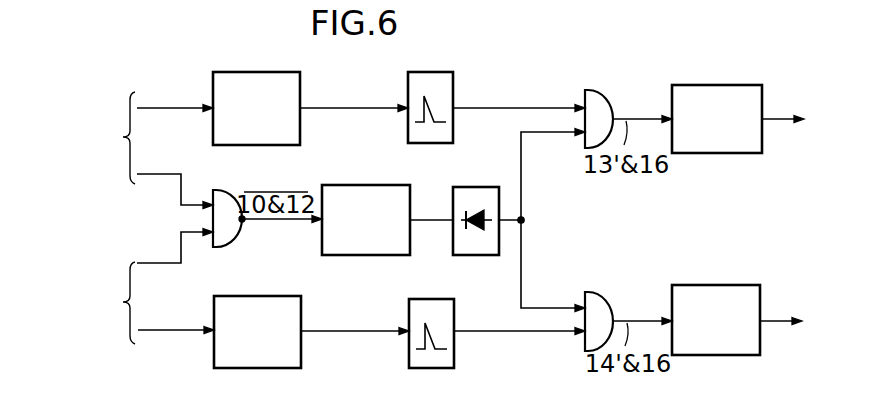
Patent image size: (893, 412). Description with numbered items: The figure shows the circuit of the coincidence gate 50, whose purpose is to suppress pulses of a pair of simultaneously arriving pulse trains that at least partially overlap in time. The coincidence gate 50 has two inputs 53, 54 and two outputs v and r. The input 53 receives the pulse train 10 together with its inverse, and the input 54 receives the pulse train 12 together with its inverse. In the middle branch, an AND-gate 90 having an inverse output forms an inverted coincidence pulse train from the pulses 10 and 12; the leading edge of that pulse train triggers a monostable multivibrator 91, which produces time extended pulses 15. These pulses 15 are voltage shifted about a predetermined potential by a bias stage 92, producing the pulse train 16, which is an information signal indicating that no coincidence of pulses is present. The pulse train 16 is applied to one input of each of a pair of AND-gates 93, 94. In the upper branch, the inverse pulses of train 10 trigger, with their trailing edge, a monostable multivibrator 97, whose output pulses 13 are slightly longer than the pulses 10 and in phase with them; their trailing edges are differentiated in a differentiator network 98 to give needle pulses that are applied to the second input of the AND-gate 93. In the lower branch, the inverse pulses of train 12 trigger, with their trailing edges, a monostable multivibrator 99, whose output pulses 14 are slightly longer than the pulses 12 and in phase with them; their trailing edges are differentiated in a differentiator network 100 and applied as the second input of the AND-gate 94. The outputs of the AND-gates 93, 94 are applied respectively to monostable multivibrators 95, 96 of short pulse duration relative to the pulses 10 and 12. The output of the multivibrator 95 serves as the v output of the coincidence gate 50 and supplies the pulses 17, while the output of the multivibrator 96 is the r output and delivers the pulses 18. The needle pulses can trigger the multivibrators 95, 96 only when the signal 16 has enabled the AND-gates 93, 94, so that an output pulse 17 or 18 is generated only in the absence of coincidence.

The pulse train 10 is at (151, 78).
The pulse train 12 is at (177, 303).
The output pulses 13 is at (442, 96).
The output pulses 14 is at (443, 319).
The time extended pulses 15 is at (431, 209).
The pulse train 16 is at (542, 220).
The pulses 17 is at (792, 111).
The pulses 18 is at (788, 312).
The coincidence gate 50 is at (647, 233).
The input 53 is at (113, 138).
The input 54 is at (113, 303).
The AND-gate 90 is at (230, 198).
The monostable multivibrator 91 is at (374, 190).
The bias stage 92 is at (481, 192).
The AND-gate 93 is at (604, 104).
The AND-gate 94 is at (602, 311).
The monostable multivibrator 95 is at (756, 91).
The monostable multivibrator 96 is at (717, 292).
The monostable multivibrator 97 is at (286, 79).
The differentiator network 98 is at (444, 80).
The monostable multivibrator 99 is at (280, 305).
The differentiator network 100 is at (432, 305).